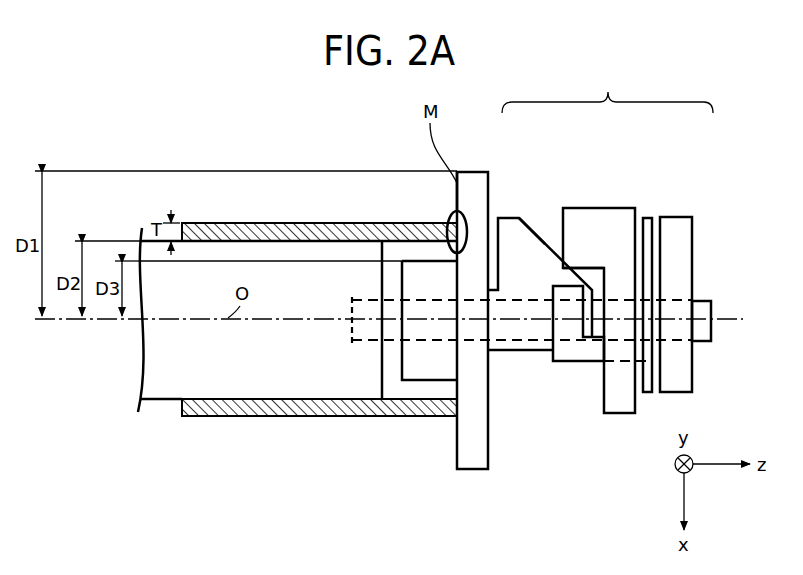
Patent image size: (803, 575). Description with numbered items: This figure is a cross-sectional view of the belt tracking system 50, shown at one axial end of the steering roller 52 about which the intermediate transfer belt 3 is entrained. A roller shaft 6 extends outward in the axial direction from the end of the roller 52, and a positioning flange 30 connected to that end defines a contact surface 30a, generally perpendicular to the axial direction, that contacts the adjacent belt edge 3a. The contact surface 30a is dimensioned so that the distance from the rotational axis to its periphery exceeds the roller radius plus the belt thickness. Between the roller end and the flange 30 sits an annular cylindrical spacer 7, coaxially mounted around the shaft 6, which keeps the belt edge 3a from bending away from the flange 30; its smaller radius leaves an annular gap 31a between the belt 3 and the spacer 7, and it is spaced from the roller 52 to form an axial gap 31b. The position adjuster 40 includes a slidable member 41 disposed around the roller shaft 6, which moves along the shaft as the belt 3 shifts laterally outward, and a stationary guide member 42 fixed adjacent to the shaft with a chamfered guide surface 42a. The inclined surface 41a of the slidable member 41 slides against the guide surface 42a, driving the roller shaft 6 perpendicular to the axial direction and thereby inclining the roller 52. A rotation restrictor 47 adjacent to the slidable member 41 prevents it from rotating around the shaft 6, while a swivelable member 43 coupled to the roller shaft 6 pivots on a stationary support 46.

The intermediate transfer belt 3 is at (243, 224).
The belt edge 3a is at (450, 213).
The roller shaft 6 is at (712, 304).
The spacer 7 is at (437, 372).
The positioning flange 30 is at (471, 177).
The contact surface 30a is at (455, 178).
The annular gap 31a is at (401, 396).
The axial gap 31b is at (382, 372).
The position adjuster 40 is at (607, 90).
The slidable member 41 is at (502, 218).
The inclined surface 41a is at (526, 222).
The stationary guide member 42 is at (618, 212).
The guide surface 42a is at (560, 266).
The swivelable member 43 is at (680, 218).
The stationary support 46 is at (650, 218).
The rotation restrictor 47 is at (579, 365).
The belt tracking system 50 is at (727, 180).
The roller 52 is at (250, 408).